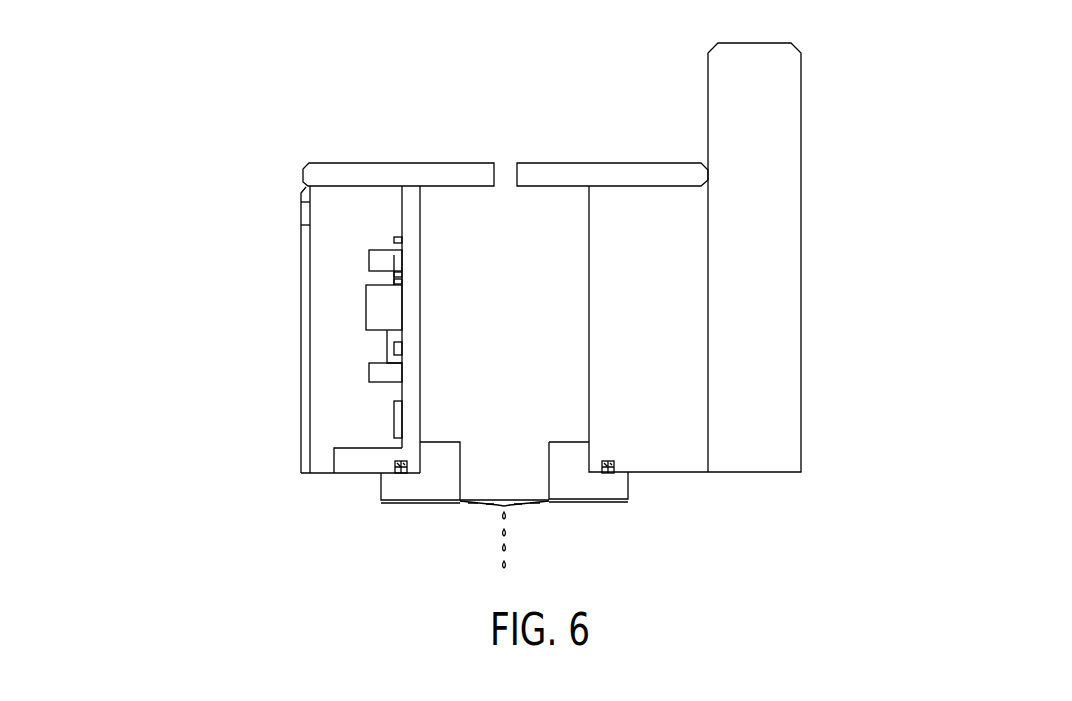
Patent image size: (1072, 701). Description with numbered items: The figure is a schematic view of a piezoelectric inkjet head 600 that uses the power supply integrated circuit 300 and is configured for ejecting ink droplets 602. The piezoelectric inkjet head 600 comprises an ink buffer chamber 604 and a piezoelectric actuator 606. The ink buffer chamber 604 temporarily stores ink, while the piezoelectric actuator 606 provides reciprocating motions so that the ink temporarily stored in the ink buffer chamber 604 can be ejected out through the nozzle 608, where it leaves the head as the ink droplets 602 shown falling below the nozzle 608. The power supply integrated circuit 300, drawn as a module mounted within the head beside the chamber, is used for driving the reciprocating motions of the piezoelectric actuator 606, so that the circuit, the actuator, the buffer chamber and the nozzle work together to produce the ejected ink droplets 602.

The piezoelectric inkjet head 600 is at (1048, 62).
The ink buffer chamber 604 is at (505, 200).
The power supply integrated circuit 300 is at (358, 317).
The piezoelectric actuator 606 is at (395, 502).
The nozzle 608 is at (502, 503).
The ink droplets 602 is at (508, 549).